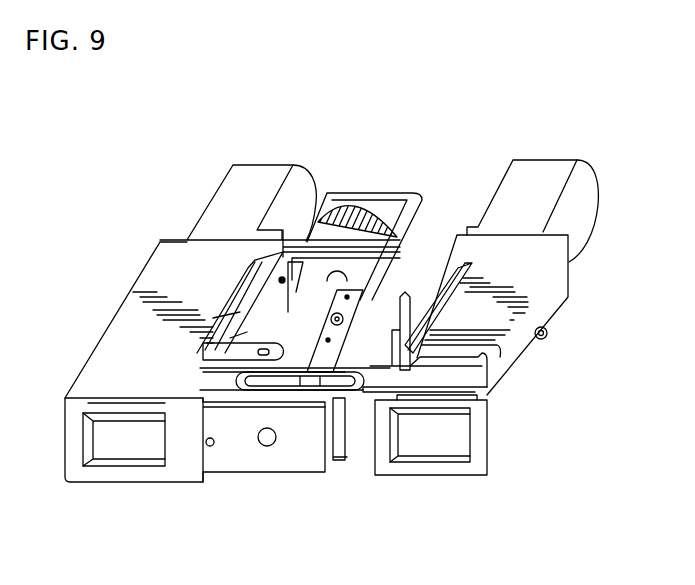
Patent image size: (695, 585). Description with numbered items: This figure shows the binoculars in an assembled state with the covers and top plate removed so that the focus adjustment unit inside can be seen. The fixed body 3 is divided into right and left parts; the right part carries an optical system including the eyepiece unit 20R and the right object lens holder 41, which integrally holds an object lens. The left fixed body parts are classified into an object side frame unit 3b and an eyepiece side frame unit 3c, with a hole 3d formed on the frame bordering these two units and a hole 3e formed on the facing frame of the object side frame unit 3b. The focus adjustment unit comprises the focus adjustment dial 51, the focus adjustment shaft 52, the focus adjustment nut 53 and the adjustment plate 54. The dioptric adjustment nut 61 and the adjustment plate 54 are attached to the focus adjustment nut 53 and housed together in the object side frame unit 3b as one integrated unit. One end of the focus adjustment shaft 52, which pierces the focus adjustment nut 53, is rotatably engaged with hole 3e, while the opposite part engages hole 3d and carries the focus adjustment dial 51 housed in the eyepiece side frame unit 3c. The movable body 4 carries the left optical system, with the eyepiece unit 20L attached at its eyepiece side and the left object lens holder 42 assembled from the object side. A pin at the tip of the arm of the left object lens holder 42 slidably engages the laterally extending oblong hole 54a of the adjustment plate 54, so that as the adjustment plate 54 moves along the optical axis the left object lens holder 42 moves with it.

The fixed body 3 is at (133, 305).
The object side frame unit 3b is at (262, 325).
The eyepiece side frame unit 3c is at (358, 196).
The hole 3d is at (326, 272).
The hole 3e is at (267, 447).
The movable body 4 is at (557, 293).
The eyepiece unit 20R is at (257, 178).
The eyepiece unit 20L is at (587, 200).
The right object lens holder 41 is at (203, 357).
The left object lens holder 42 is at (458, 377).
The focus adjustment dial 51 is at (373, 197).
The focus adjustment shaft 52 is at (347, 278).
The focus adjustment nut 53 is at (276, 274).
The adjustment plate 54 is at (318, 355).
The oblong hole 54a is at (336, 445).
The dioptric adjustment nut 61 is at (243, 315).